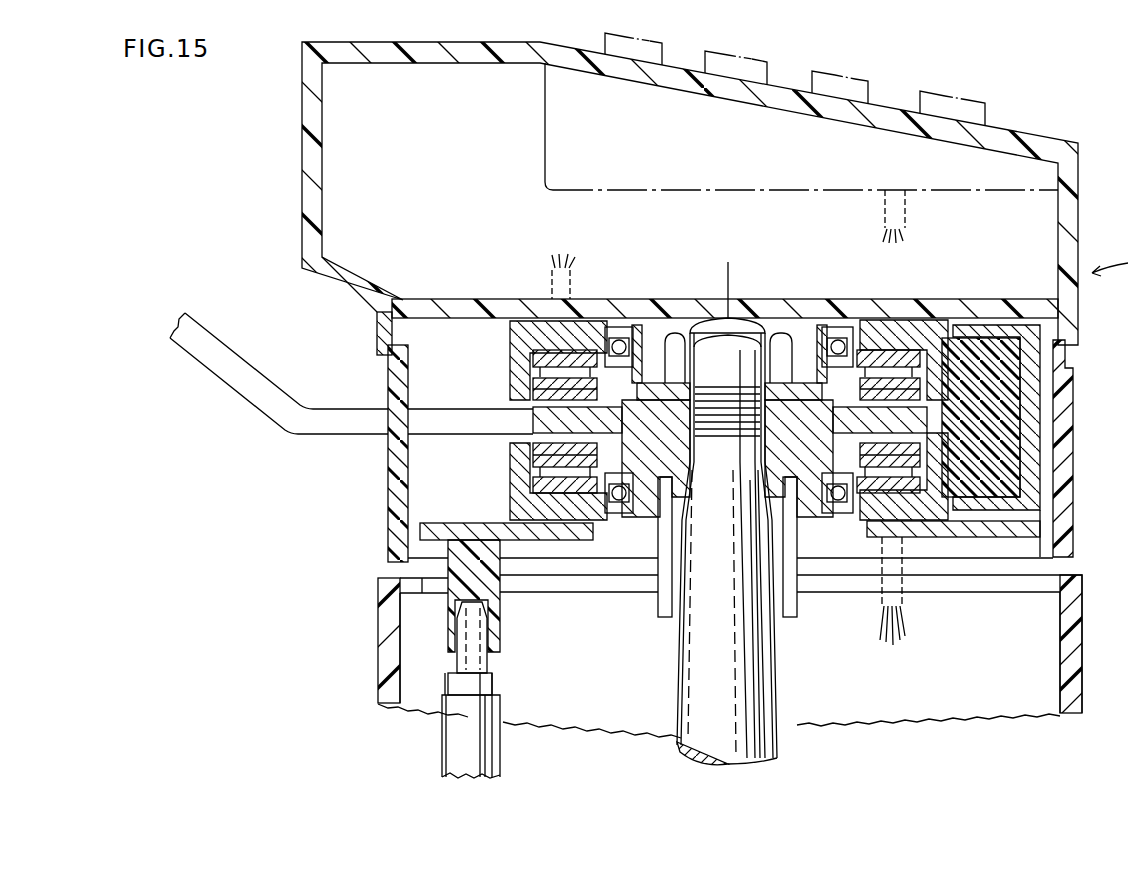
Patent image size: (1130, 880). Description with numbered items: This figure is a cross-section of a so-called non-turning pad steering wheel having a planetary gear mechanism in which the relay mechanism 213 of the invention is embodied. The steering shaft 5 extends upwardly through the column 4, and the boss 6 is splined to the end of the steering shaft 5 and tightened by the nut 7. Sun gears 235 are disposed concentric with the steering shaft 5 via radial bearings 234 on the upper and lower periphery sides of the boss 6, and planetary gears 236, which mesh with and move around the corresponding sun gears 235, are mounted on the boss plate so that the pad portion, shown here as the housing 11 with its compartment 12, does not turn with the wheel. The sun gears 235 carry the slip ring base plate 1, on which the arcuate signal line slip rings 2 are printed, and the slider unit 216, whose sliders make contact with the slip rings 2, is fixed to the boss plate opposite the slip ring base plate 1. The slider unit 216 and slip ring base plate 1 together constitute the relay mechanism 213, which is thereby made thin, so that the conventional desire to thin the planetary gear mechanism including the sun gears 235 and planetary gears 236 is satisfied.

The slip ring base plate 1 is at (548, 324).
The slip rings 2 is at (420, 420).
The column 4 is at (1074, 611).
The steering shaft 5 is at (672, 741).
The boss 6 is at (800, 512).
The nut 7 is at (777, 322).
The housing 11 is at (1070, 232).
The compartment 12 is at (551, 130).
The relay mechanism 213 is at (530, 368).
The slider unit 216 is at (533, 386).
The radial bearings 234 is at (848, 326).
The sun gears 235 is at (917, 328).
The planetary gears 236 is at (1000, 340).